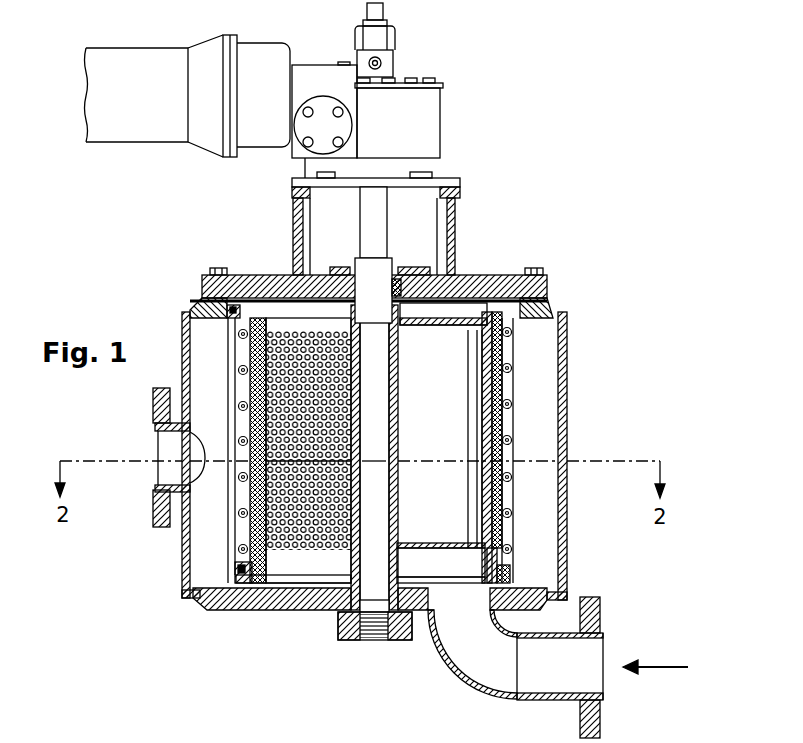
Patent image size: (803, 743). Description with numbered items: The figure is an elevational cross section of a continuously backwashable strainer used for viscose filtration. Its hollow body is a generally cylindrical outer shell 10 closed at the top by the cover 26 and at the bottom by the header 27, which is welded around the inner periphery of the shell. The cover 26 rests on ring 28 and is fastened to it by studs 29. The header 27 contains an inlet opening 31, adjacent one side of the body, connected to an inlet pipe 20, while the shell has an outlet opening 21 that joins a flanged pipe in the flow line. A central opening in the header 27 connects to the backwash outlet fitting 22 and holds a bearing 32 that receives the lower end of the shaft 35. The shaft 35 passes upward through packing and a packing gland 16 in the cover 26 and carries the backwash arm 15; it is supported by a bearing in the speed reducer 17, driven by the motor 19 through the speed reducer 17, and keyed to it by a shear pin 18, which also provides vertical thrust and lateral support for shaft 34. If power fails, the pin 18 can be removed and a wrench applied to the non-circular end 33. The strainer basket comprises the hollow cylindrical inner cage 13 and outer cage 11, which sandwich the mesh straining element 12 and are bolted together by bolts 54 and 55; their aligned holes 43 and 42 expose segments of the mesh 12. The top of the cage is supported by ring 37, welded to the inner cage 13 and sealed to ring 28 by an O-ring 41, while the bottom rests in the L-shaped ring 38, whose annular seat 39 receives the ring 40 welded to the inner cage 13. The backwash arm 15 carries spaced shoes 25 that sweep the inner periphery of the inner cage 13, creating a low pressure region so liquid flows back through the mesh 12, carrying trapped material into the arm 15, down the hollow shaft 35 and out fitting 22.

The outer shell 10 is at (572, 401).
The outer cage 11 is at (498, 417).
The mesh straining element 12 is at (509, 346).
The inner cage 13 is at (490, 417).
The backwash arm 15 is at (451, 322).
The packing gland 16 is at (404, 294).
The speed reducer 17 is at (425, 124).
The shear pin 18 is at (382, 63).
The motor 19 is at (142, 128).
The inlet pipe 20 is at (576, 663).
The outlet opening 21 is at (173, 450).
The backwash outlet fitting 22 is at (377, 634).
The shoes 25 is at (477, 363).
The cover 26 is at (477, 280).
The header 27 is at (250, 596).
The ring 28 is at (537, 305).
The studs 29 is at (218, 268).
The inlet opening 31 is at (457, 603).
The bearing 32 is at (346, 598).
The non-circular end 33 is at (384, 12).
The shaft 34 is at (380, 237).
The shaft 35 is at (380, 355).
The ring 37 is at (263, 315).
The ring 38 is at (506, 578).
The annular seat 39 is at (490, 567).
The ring 40 is at (255, 569).
The O-ring 41 is at (222, 318).
The holes 42 is at (502, 393).
The holes 43 is at (487, 393).
The bolts 54 is at (511, 477).
The bolts 55 is at (238, 482).